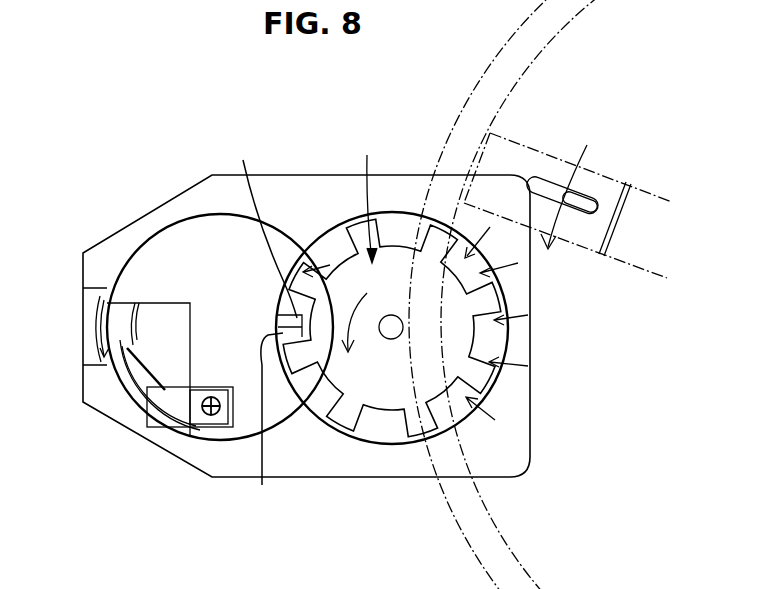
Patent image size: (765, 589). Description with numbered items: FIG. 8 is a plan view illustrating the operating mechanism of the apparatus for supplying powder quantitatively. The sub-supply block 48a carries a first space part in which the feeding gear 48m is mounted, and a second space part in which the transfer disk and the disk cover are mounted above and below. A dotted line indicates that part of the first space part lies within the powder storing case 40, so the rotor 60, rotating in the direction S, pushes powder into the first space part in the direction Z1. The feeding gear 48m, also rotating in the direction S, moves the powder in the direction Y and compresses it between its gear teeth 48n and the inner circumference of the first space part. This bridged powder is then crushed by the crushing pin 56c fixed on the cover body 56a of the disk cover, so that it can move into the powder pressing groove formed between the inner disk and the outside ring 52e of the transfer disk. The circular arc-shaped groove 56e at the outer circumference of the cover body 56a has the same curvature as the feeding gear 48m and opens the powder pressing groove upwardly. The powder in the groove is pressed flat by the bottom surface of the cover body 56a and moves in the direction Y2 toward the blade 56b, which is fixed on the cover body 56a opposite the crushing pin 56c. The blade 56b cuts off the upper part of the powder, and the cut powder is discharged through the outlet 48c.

The powder storing case 40 is at (466, 551).
The sub-supply block 48a is at (344, 467).
The outlet 48c is at (93, 313).
The feeding gear 48m is at (361, 197).
The gear teeth 48n is at (438, 222).
The outside ring 52e is at (107, 325).
The cover body 56a is at (183, 258).
The blade 56b is at (175, 407).
The crushing pin 56c is at (257, 226).
The circular arc-shaped groove 56e is at (272, 412).
The rotor 60 is at (629, 268).
The rotation direction S is at (460, 247).
The powder transfer direction Y is at (316, 279).
The powder movement direction in the pressing groove Y2 is at (84, 329).
The powder pushing direction Z1 is at (489, 242).